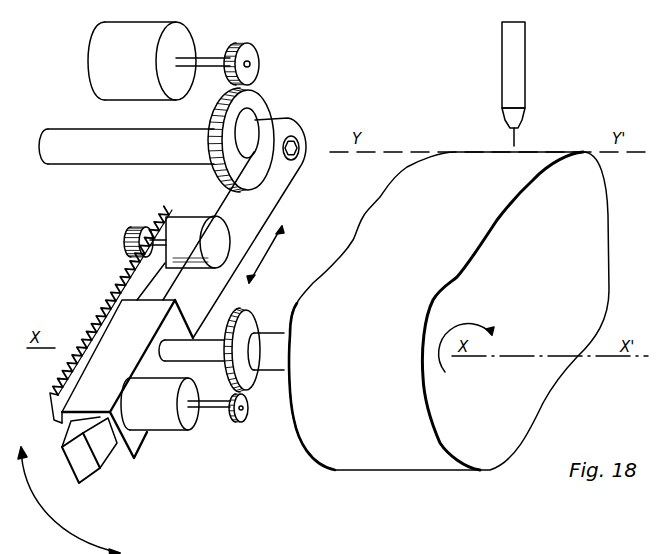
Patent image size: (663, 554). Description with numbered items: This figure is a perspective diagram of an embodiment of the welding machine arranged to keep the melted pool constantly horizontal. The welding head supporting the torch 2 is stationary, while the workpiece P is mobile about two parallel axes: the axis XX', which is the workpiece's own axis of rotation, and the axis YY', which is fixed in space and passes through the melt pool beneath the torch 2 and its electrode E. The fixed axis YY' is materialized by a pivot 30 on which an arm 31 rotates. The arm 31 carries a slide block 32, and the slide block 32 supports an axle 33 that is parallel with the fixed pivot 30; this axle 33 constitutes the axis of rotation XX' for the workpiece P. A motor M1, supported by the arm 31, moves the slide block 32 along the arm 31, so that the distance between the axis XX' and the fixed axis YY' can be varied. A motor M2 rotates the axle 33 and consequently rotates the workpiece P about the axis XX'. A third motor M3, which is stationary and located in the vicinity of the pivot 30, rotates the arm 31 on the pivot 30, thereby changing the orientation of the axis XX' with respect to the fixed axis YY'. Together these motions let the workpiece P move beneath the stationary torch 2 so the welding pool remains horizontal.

The torch 2 is at (527, 68).
The electrode E is at (517, 138).
The workpiece P is at (398, 470).
The pivot 30 is at (92, 158).
The arm 31 is at (283, 177).
The slide block 32 is at (113, 372).
The axle 33 is at (270, 340).
The motor M1 is at (190, 218).
The motor M2 is at (174, 422).
The motor M3 is at (173, 61).